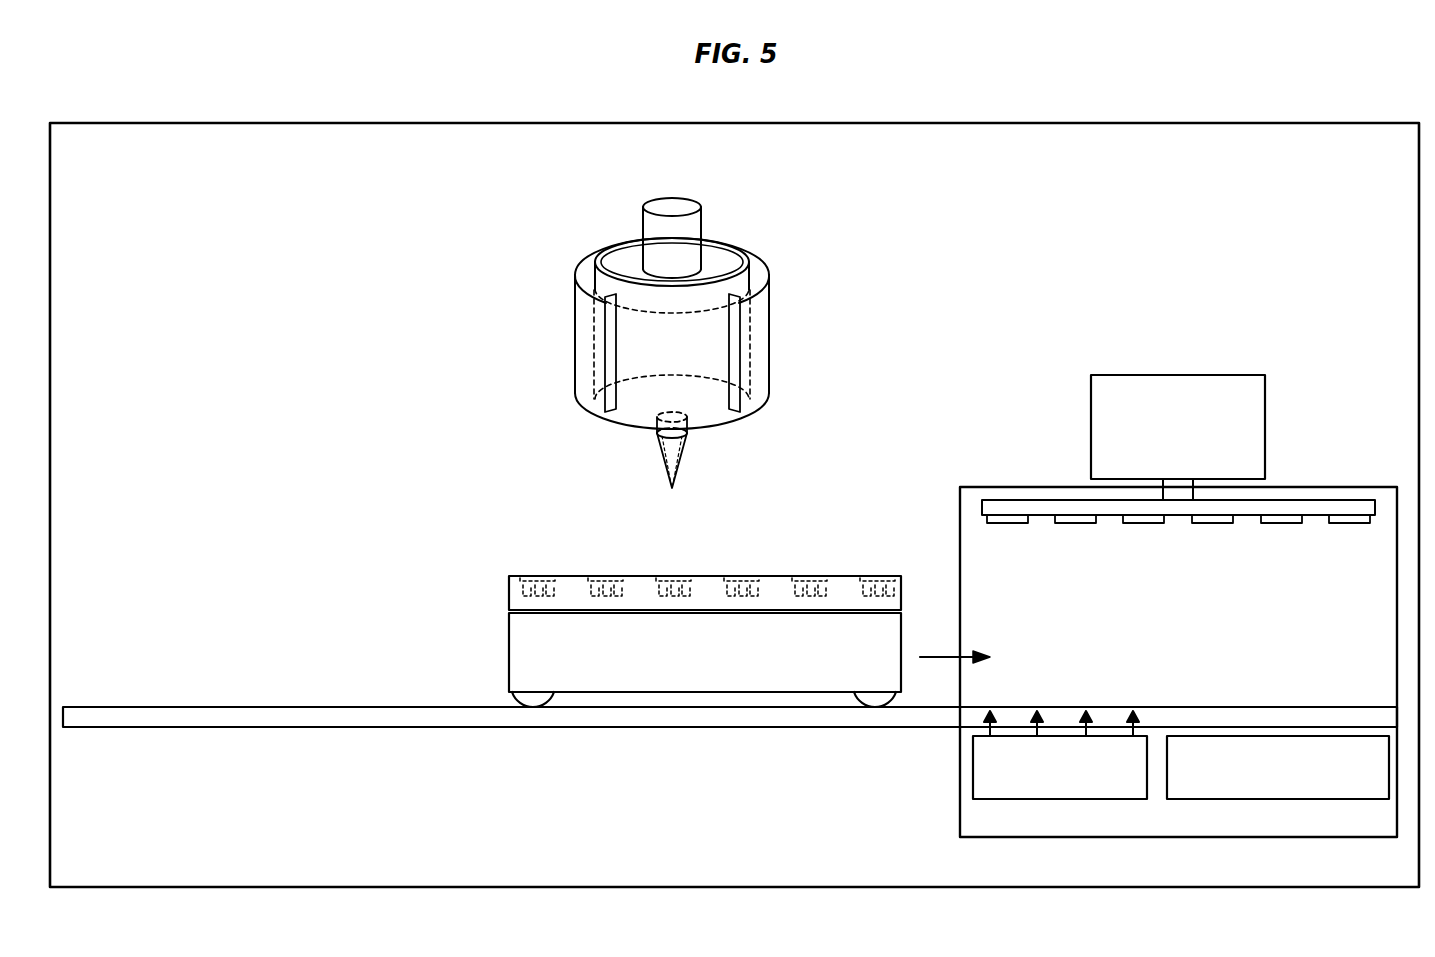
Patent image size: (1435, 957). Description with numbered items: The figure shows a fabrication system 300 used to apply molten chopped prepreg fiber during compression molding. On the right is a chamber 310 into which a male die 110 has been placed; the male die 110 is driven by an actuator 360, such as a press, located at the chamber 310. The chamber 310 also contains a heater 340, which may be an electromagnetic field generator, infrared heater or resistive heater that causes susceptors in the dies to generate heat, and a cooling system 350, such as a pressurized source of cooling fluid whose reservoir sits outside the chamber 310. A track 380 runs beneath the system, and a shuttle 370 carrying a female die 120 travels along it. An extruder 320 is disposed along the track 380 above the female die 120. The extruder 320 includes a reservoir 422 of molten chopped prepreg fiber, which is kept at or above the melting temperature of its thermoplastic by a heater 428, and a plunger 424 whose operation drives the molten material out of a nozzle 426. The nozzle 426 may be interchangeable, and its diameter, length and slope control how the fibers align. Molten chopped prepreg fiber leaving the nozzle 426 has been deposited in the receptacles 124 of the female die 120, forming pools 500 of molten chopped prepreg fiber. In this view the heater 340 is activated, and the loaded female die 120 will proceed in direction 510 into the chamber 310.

The fabrication system 300 is at (716, 876).
The chamber 310 is at (1209, 830).
The extruder 320 is at (785, 233).
The heater 340 is at (1042, 791).
The cooling system 350 is at (1261, 791).
The actuator 360 is at (1159, 456).
The shuttle 370 is at (509, 657).
The track 380 is at (330, 728).
The male die 110 is at (1325, 500).
The female die 120 is at (509, 593).
The receptacles 124 is at (549, 590).
The pools of molten chopped prepreg fiber 500 is at (542, 576).
The direction 510 is at (943, 657).
The reservoir 422 is at (715, 410).
The plunger 424 is at (702, 226).
The nozzle 426 is at (676, 488).
The heater 428 is at (770, 298).